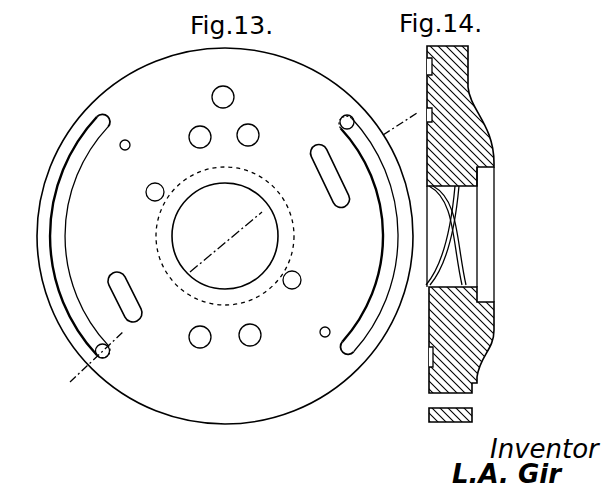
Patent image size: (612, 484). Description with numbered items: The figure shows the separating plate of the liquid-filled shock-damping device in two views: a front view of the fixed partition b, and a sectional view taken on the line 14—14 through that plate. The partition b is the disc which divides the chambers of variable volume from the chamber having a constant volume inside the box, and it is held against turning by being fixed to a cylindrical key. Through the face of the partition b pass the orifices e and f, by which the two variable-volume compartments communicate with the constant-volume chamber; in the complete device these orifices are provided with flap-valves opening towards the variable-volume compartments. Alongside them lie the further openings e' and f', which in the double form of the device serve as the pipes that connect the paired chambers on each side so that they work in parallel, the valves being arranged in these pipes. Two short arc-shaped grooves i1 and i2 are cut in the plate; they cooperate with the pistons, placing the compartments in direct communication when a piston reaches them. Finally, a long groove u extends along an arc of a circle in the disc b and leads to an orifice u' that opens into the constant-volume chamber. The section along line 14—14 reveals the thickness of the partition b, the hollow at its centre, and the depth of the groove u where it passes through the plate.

In FIG. 13, the fixed partition b is at (225, 236).
In FIG. 14, the fixed partition b is at (468, 327).
In FIG. 13, the orifice e is at (189, 137).
In FIG. 13, the pipe e' is at (260, 134).
In FIG. 13, the orifice f is at (190, 337).
In FIG. 13, the pipe f' is at (261, 334).
In FIG. 13, the groove i1 is at (123, 296).
In FIG. 13, the groove i2 is at (332, 178).
In FIG. 13, the groove u is at (80, 236).
In FIG. 14, the groove u is at (437, 402).
In FIG. 13, the orifice u' is at (368, 234).
In FIG. 13, the section line 14 is at (230, 238).